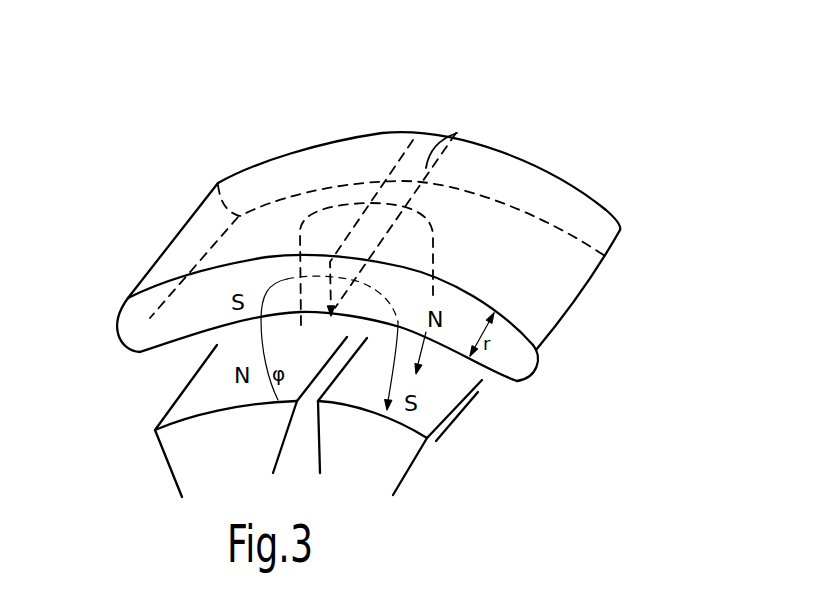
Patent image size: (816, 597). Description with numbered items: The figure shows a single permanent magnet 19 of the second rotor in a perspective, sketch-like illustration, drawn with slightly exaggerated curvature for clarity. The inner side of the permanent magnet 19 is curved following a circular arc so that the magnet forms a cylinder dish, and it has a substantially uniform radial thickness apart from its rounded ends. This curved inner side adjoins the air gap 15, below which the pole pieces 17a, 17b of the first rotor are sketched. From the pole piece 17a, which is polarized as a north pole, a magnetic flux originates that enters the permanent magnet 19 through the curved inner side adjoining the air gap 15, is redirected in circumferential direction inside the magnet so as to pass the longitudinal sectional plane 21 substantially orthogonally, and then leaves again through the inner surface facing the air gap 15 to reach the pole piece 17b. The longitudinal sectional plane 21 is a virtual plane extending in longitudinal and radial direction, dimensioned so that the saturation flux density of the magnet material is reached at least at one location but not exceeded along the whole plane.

The air gap 15 is at (272, 417).
The pole piece 17a is at (226, 427).
The pole piece 17b is at (372, 428).
The permanent magnet 19 is at (542, 128).
The longitudinal sectional plane 21 is at (457, 130).